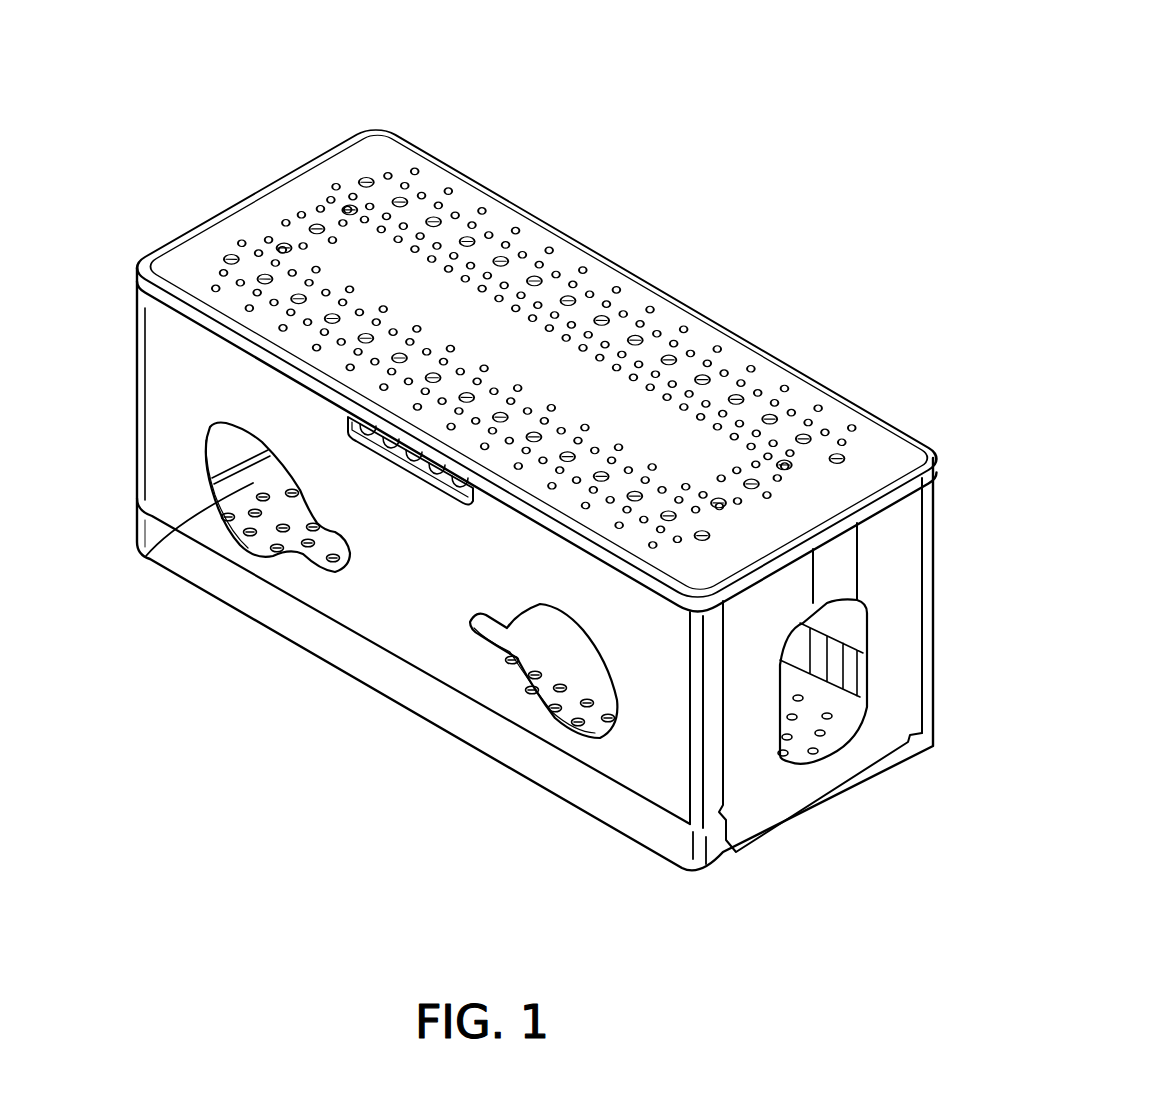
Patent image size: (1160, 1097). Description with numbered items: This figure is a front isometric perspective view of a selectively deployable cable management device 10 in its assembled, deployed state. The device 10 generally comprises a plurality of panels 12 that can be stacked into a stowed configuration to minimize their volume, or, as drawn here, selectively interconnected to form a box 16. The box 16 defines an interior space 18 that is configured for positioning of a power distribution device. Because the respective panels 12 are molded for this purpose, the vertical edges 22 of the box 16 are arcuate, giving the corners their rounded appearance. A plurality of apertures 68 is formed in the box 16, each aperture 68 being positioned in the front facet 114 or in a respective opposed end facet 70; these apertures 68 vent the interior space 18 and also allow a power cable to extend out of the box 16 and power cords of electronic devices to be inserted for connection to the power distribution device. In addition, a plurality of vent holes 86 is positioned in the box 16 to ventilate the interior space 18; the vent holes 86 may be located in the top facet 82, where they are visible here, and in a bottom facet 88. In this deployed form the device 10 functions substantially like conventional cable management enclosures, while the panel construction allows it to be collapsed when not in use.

The selectively deployable cable management device 10 is at (735, 116).
The panels 12 is at (272, 318).
The box 16 is at (857, 350).
The interior space 18 is at (415, 300).
The vertical edges 22 is at (137, 380).
The apertures 68 is at (793, 675).
The opposed end facet 70 is at (872, 615).
The top facet 82 is at (494, 362).
The vent holes 86 is at (720, 347).
The bottom facet 88 is at (820, 698).
The front facet 114 is at (444, 573).